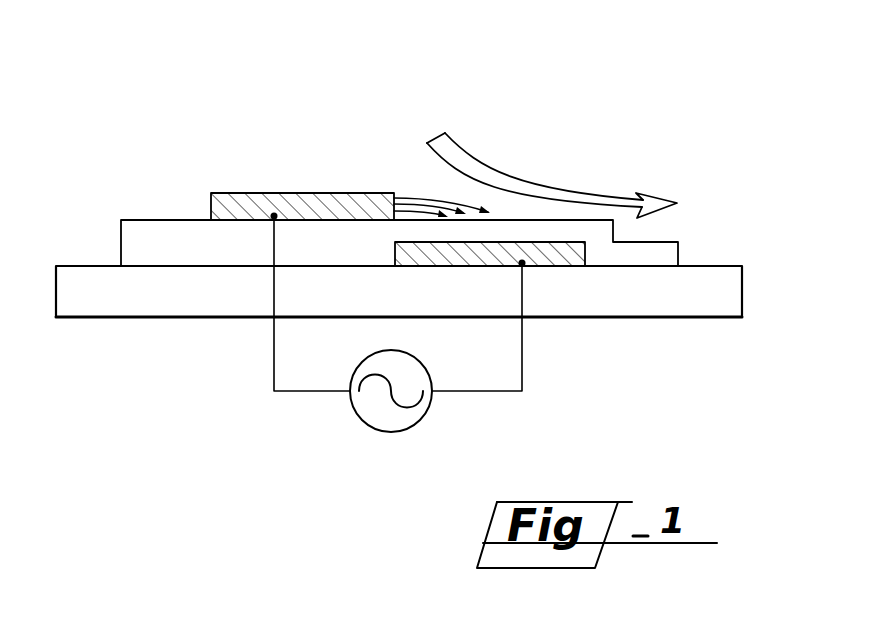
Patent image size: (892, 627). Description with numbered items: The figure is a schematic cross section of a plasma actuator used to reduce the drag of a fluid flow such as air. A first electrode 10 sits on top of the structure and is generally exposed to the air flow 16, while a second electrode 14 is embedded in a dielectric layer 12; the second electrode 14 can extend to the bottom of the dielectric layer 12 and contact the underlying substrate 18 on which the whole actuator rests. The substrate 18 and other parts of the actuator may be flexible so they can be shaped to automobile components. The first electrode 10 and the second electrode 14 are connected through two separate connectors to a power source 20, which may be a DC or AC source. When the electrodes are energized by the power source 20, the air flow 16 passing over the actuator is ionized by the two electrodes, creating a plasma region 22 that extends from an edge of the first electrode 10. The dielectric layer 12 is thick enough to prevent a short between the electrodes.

The first electrode 10 is at (282, 203).
The dielectric layer 12 is at (525, 227).
The second electrode 14 is at (560, 243).
The air flow 16 is at (653, 217).
The substrate 18 is at (647, 297).
The power source 20 is at (368, 430).
The plasma region 22 is at (428, 189).